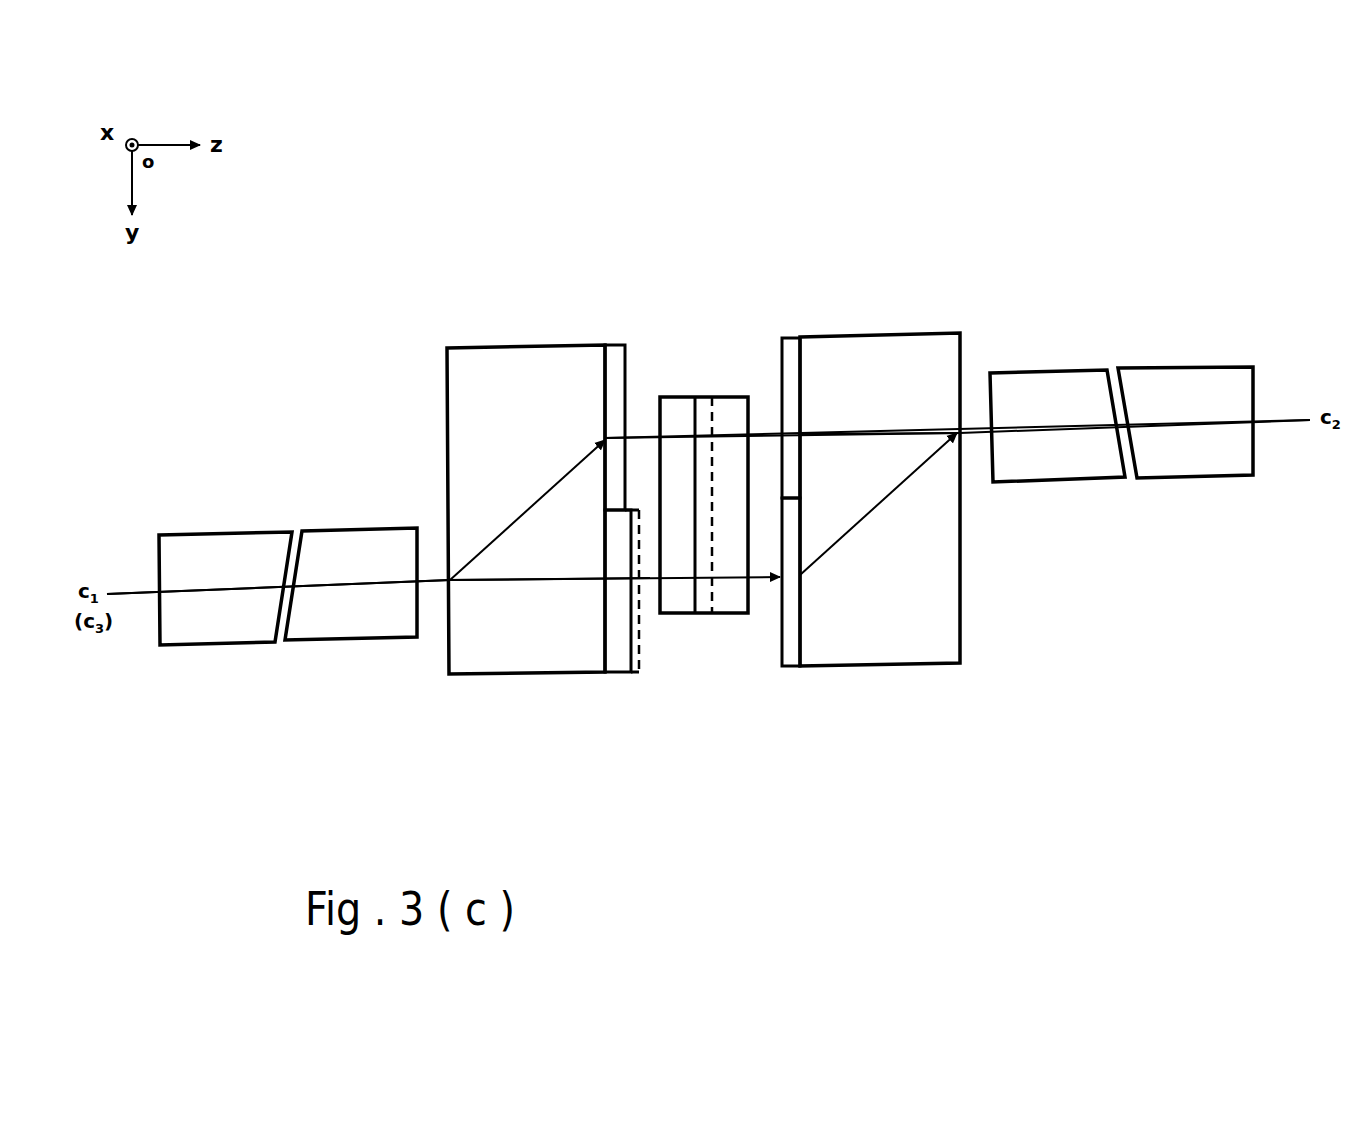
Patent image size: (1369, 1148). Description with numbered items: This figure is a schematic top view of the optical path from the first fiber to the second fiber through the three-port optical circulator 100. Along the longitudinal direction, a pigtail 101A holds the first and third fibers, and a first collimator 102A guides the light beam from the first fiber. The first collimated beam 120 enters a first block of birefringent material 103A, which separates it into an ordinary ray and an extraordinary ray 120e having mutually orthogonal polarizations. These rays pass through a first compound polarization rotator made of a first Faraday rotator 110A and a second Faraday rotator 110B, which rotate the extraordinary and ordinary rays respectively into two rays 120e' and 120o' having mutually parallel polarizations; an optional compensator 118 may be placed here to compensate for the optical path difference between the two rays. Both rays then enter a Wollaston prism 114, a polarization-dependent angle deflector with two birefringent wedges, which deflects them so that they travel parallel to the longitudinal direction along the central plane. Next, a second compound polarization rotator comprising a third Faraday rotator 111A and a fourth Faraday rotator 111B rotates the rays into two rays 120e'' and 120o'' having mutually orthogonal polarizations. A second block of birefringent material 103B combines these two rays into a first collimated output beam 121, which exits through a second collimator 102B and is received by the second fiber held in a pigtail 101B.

The optical circulator 100 is at (1188, 160).
The pigtail 101A is at (265, 532).
The first collimator 102A is at (357, 530).
The first block of birefringent material 103A is at (498, 347).
The first Faraday rotator 110A is at (618, 345).
The second Faraday rotator 110B is at (623, 677).
The compensator 118 is at (637, 672).
The Wollaston prism 114 is at (728, 395).
The third Faraday rotator 111A is at (768, 345).
The fourth Faraday rotator 111B is at (785, 648).
The second block of birefringent material 103B is at (898, 335).
The second collimator 102B is at (1043, 370).
The pigtail 101B is at (1173, 368).
The first collimated beam 120 is at (437, 580).
The extraordinary ray 120e is at (527, 505).
The rotated ordinary ray 120o' is at (596, 627).
The rotated extraordinary ray 120e' is at (782, 396).
The re-rotated extraordinary ray 120e'' is at (880, 396).
The re-rotated ordinary ray 120o'' is at (878, 504).
The first collimated output beam 121 is at (977, 433).